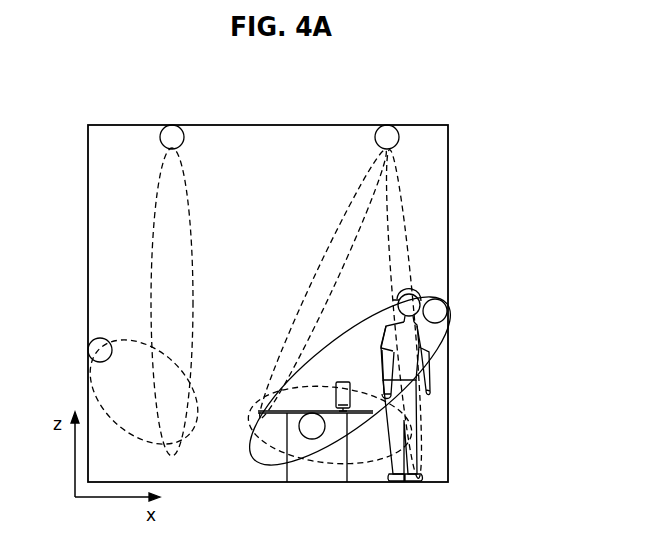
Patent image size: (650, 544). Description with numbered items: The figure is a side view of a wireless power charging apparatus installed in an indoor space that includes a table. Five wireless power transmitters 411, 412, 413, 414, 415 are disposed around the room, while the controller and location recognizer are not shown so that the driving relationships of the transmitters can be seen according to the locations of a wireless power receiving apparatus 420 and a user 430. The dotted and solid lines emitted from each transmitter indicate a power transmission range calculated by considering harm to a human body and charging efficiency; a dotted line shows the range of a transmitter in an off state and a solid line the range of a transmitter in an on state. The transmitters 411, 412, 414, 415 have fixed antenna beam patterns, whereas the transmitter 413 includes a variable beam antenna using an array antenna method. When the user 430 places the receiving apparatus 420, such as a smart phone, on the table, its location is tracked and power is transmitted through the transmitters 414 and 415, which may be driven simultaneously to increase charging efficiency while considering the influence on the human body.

The wireless power transmitter 411 is at (96, 340).
The wireless power transmitter 412 is at (183, 135).
The wireless power transmitter 413 is at (398, 135).
The wireless power transmitter 414 is at (312, 440).
The wireless power transmitter 415 is at (445, 302).
The wireless power receiving apparatus 420 is at (352, 404).
The user 430 is at (403, 417).